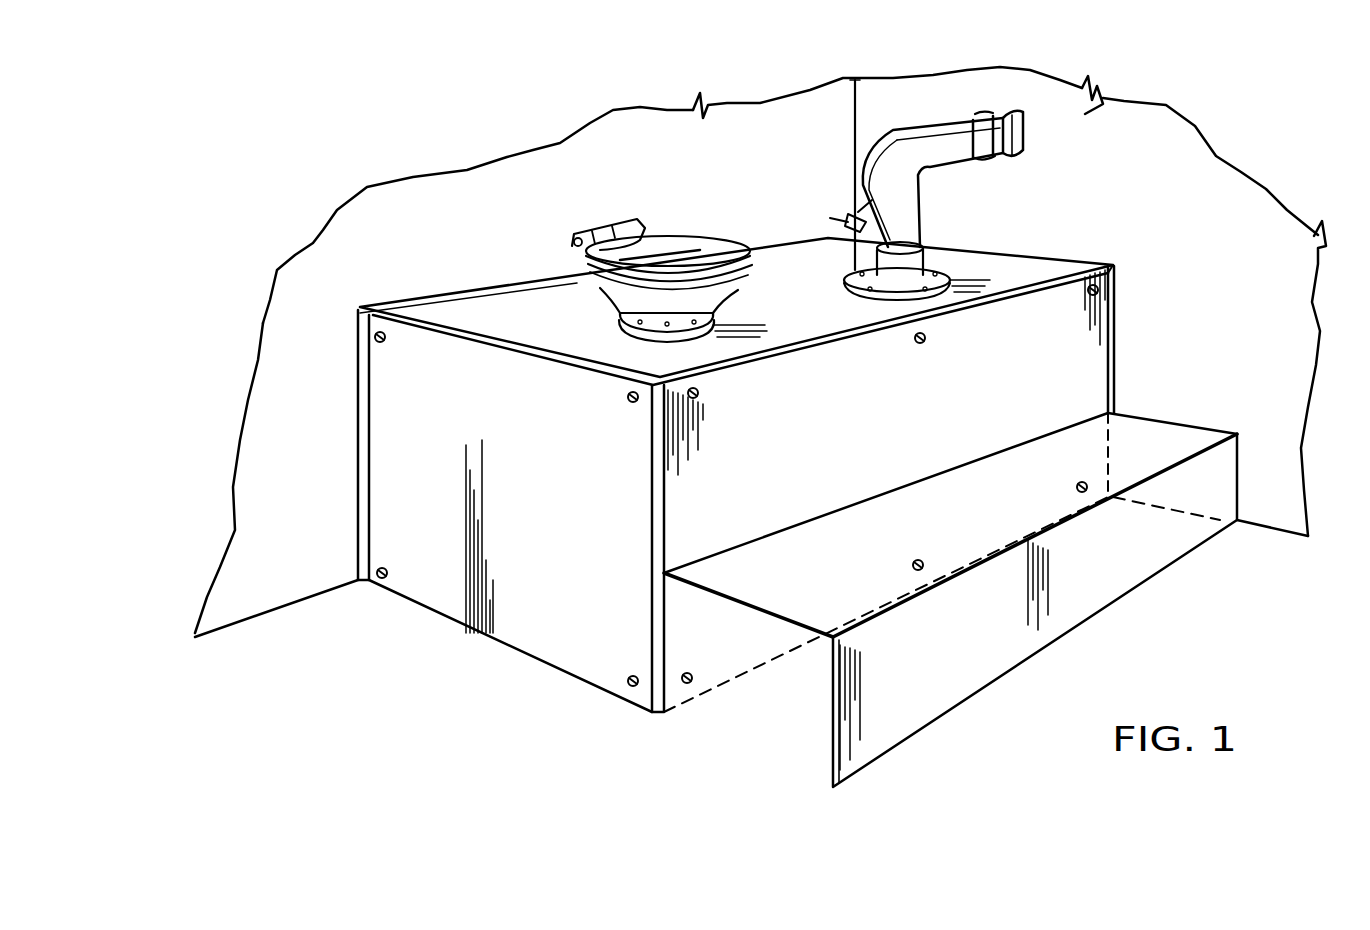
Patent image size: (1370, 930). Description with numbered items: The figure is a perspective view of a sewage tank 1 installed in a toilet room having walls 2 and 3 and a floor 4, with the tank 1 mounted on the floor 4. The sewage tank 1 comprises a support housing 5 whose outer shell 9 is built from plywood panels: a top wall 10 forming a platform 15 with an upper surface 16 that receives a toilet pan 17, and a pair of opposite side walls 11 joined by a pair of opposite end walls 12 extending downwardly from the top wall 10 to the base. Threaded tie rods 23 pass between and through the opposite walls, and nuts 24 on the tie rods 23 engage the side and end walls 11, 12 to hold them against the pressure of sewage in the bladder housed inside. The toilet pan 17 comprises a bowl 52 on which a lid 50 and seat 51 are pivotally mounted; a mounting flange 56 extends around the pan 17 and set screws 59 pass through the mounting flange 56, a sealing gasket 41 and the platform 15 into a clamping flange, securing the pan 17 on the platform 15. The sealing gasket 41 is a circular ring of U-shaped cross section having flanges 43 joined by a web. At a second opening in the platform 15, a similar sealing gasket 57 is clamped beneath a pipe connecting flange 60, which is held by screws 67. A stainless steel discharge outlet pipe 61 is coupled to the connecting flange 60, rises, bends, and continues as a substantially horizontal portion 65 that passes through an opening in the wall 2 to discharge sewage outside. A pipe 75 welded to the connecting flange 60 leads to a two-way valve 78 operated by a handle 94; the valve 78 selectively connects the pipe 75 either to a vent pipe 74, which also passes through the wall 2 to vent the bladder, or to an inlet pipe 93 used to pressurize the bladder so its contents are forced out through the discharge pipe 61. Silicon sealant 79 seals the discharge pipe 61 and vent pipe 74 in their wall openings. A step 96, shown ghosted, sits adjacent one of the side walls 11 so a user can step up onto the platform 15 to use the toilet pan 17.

The sewage tank 1 is at (433, 215).
The wall 2 is at (1237, 178).
The wall 3 is at (258, 450).
The floor 4 is at (413, 757).
The support housing 5 is at (754, 482).
The outer shell 9 is at (385, 483).
The top wall 10 is at (443, 313).
The side walls 11 is at (362, 428).
The end walls 12 is at (535, 633).
The platform 15 is at (1084, 258).
The upper surface 16 is at (1032, 262).
The toilet pan 17 is at (657, 237).
The threaded tie rods 23 is at (376, 340).
The nuts 24 is at (380, 337).
The sealing gasket 41 is at (617, 337).
The flanges 43 is at (703, 342).
The lid 50 is at (690, 237).
The seat 51 is at (578, 262).
The bowl 52 is at (585, 290).
The mounting flange 56 is at (740, 322).
The sealing gasket 57 is at (935, 305).
The set screws 59 is at (623, 337).
The pipe connecting flange 60 is at (947, 262).
The discharge outlet pipe 61 is at (923, 143).
The portion of the discharge pipe 65 is at (1085, 88).
The screws 67 is at (935, 252).
The vent pipe 74 is at (883, 135).
The pipe 75 is at (848, 262).
The two-way valve 78 is at (858, 222).
The silicon sealant 79 is at (980, 120).
The inlet pipe 93 is at (835, 210).
The handle 94 is at (855, 205).
The step 96 is at (827, 637).